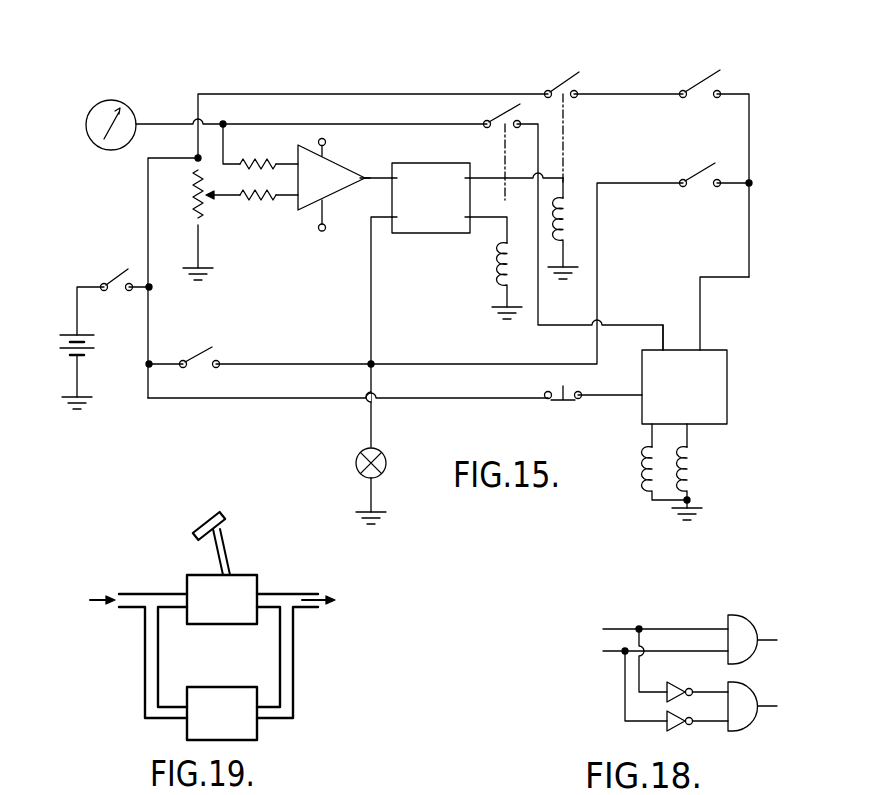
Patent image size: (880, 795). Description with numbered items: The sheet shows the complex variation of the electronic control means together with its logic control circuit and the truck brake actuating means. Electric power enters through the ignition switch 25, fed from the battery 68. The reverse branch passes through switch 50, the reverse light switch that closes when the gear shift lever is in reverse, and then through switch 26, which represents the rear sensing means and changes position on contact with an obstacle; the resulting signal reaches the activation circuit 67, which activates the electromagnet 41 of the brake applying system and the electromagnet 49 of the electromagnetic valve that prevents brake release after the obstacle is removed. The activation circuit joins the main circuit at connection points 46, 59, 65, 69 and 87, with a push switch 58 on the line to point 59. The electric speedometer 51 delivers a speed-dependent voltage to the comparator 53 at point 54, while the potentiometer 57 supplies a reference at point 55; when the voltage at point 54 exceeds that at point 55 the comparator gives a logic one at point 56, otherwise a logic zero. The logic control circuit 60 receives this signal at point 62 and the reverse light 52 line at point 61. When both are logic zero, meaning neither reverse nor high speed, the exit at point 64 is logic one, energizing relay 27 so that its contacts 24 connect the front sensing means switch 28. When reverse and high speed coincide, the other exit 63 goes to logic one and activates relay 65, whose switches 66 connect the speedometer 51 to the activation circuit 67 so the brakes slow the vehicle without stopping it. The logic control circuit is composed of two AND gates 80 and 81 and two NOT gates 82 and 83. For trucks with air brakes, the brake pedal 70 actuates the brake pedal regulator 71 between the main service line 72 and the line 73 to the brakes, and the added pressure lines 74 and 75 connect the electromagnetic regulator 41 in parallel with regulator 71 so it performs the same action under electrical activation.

In FIG. 15, the contacts 24 is at (556, 85).
In FIG. 15, the ignition switch 25 is at (115, 270).
In FIG. 15, the switch representing the rear sensing means 26 is at (695, 176).
In FIG. 15, the relay 27 is at (567, 212).
In FIG. 15, the switch representing the front sensing means 28 is at (698, 86).
In FIG. 15, the electromagnet 41 is at (648, 464).
In FIG. 19, the electromagnet 41 is at (246, 727).
In FIG. 15, the connection point 46 is at (656, 426).
In FIG. 15, the electromagnet of the electromagnetic valve 49 is at (693, 480).
In FIG. 15, the switch 50 is at (200, 354).
In FIG. 15, the electric speedometer 51 is at (90, 110).
In FIG. 15, the reverse light 52 is at (356, 463).
In FIG. 15, the comparator 53 is at (305, 213).
In FIG. 15, the point 54 is at (281, 165).
In FIG. 15, the point 55 is at (281, 193).
In FIG. 15, the point 56 is at (346, 179).
In FIG. 15, the potentiometer 57 is at (194, 197).
In FIG. 15, the push-button switch 58 is at (565, 406).
In FIG. 15, the connection point 59 is at (658, 364).
In FIG. 15, the logic control circuit 60 is at (434, 234).
In FIG. 15, the point 61 is at (406, 216).
In FIG. 18, the point 61 is at (655, 682).
In FIG. 15, the point 62 is at (406, 178).
In FIG. 18, the point 62 is at (655, 656).
In FIG. 15, the logic unit output 63 is at (453, 216).
In FIG. 18, the logic unit output 63 is at (779, 641).
In FIG. 15, the point 64 is at (451, 178).
In FIG. 18, the point 64 is at (779, 707).
In FIG. 15, the relay 65 is at (501, 268).
In FIG. 15, the switches 66 is at (489, 116).
In FIG. 15, the activation circuit 67 is at (728, 406).
In FIG. 15, the battery 68 is at (60, 337).
In FIG. 15, the connection point 69 is at (720, 327).
In FIG. 19, the brake pedal 70 is at (229, 556).
In FIG. 19, the brake pedal regulator 71 is at (242, 596).
In FIG. 19, the main service line 72 is at (133, 597).
In FIG. 19, the line connecting the pressure to the brakes 73 is at (308, 605).
In FIG. 19, the pressure line 74 is at (150, 670).
In FIG. 19, the pressure line 75 is at (292, 676).
In FIG. 18, the AND gate 80 is at (740, 634).
In FIG. 18, the AND gate 81 is at (742, 716).
In FIG. 18, the NOT gate 82 is at (675, 686).
In FIG. 18, the NOT gate 83 is at (680, 727).
In FIG. 15, the connection point 87 is at (686, 426).